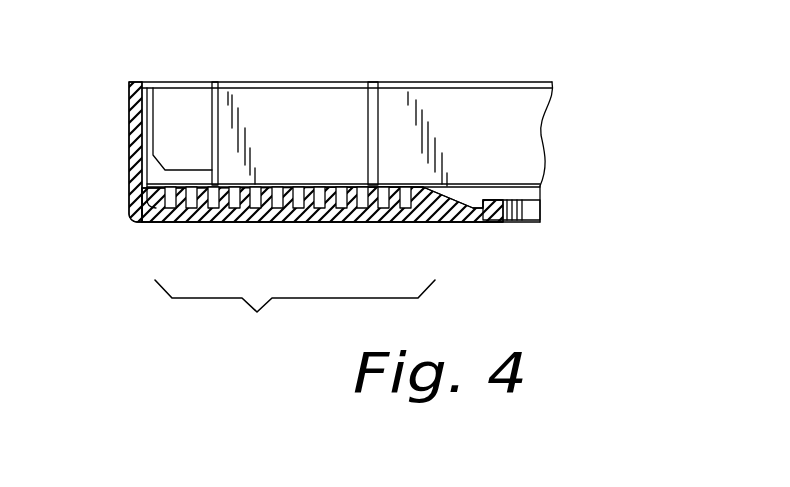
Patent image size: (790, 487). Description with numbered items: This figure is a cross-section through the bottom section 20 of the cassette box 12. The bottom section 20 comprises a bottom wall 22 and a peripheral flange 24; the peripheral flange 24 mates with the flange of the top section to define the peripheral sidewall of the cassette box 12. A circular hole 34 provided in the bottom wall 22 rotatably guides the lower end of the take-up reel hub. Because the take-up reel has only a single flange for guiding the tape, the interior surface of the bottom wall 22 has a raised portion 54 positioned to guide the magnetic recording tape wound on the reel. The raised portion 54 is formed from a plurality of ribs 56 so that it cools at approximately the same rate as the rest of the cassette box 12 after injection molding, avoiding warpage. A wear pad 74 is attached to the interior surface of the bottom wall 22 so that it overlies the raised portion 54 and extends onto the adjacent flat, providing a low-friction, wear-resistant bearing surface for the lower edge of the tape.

The cassette box 12 is at (124, 109).
The bottom section 20 is at (500, 80).
The bottom wall 22 is at (472, 223).
The peripheral flange 24 is at (130, 137).
The circular hole 34 is at (532, 210).
The raised portion 54 is at (295, 318).
The ribs 56 is at (244, 205).
The wear pad 74 is at (283, 172).